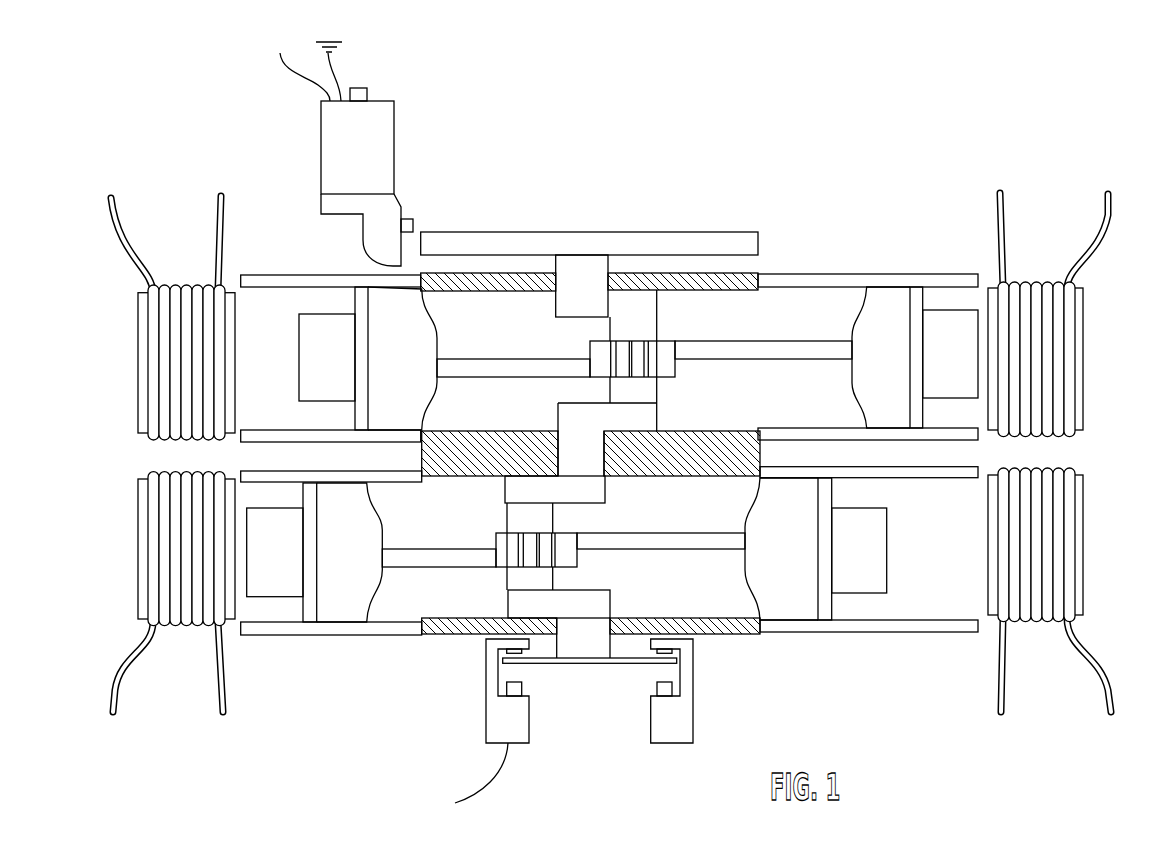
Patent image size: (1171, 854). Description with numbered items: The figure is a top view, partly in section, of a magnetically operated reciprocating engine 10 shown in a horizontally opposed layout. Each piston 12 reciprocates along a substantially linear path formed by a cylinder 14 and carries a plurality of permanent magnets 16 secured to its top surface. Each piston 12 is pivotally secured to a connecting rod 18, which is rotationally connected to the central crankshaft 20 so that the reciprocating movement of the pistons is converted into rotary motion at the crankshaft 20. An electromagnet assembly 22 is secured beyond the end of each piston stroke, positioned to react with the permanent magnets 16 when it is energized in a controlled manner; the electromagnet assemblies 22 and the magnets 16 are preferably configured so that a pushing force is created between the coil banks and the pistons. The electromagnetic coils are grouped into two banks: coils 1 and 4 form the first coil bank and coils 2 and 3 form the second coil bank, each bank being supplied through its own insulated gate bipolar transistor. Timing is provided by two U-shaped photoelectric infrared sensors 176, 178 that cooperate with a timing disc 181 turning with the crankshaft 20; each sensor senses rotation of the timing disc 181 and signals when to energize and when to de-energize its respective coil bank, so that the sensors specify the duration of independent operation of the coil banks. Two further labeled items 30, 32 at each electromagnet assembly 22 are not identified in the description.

The magnetically operated reciprocating engine 10 is at (785, 150).
The piston 12 is at (408, 357).
The cylinder 14 is at (343, 275).
The permanent magnets 16 is at (335, 357).
The connecting rod 18 is at (495, 358).
The crankshaft 20 is at (592, 460).
The electromagnet assembly 22 is at (140, 313).
The coil lead 30 is at (109, 200).
The coil lead 32 is at (224, 197).
The photoelectric infrared sensor 176 is at (520, 716).
The photoelectric infrared sensor 178 is at (683, 720).
The timing disc 181 is at (627, 663).
The first coil 1 is at (173, 549).
The second coil 2 is at (1050, 545).
The third coil 3 is at (1055, 359).
The fourth coil 4 is at (170, 363).